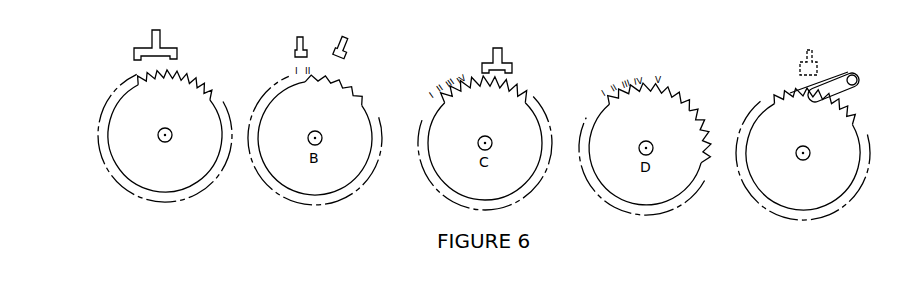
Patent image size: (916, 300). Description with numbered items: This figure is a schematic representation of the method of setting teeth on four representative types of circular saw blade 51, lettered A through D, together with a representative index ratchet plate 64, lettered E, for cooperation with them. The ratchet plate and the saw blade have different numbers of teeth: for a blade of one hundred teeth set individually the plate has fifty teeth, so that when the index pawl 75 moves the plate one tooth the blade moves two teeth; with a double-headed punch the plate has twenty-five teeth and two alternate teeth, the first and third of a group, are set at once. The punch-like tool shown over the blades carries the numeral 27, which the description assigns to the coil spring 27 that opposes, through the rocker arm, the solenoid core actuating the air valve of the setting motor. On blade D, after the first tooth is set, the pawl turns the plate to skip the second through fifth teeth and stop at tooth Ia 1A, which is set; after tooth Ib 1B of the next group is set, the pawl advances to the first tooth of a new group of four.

The coil spring 27 is at (160, 40).
The circular saw blade 51 is at (155, 114).
The index ratchet plate 64 is at (797, 130).
The index pawl 75 is at (858, 83).
The saw blade tooth Ia 1A is at (649, 95).
The saw blade tooth Ib 1B is at (704, 136).